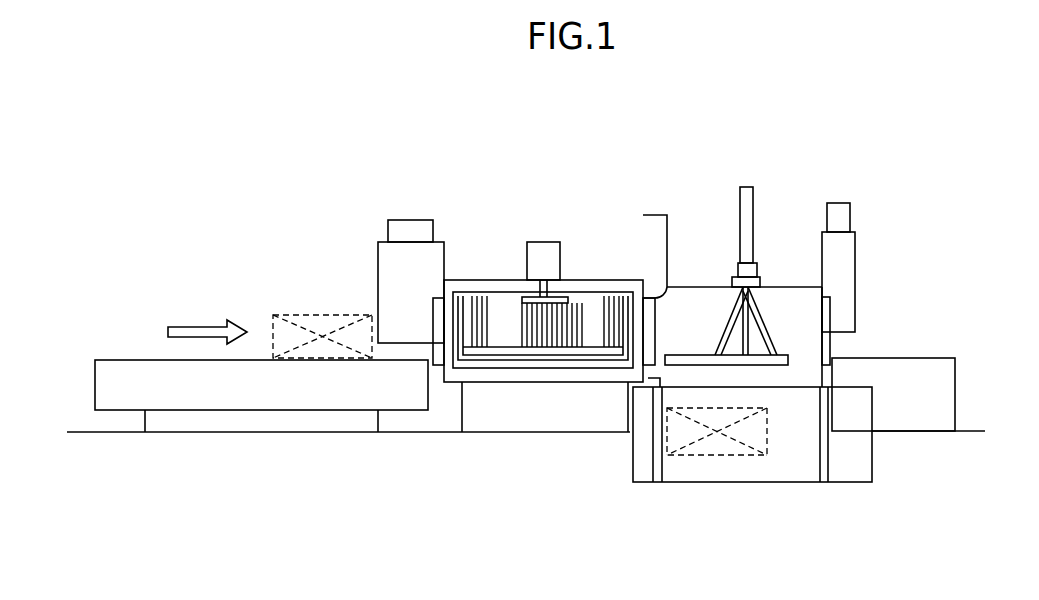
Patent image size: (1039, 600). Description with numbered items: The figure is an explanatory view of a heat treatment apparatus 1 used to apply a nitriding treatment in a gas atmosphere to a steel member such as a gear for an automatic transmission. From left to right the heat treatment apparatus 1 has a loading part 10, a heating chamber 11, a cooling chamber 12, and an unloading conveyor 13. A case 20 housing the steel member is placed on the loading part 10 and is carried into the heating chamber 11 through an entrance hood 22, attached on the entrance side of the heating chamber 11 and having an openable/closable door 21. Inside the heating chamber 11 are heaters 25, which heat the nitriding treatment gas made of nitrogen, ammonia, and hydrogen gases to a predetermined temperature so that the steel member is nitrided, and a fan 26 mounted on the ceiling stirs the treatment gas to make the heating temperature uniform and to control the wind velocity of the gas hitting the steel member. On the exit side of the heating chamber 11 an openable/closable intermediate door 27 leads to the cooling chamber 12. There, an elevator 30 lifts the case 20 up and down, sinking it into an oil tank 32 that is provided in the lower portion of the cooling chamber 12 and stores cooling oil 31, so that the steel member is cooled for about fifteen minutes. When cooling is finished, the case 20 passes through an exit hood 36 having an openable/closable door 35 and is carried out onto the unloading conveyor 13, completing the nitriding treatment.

The heat treatment apparatus 1 is at (578, 165).
The loading part 10 is at (114, 358).
The heating chamber 11 is at (619, 280).
The cooling chamber 12 is at (786, 292).
The unloading conveyor 13 is at (941, 358).
The case 20 is at (293, 315).
The door 21 is at (423, 310).
The entrance hood 22 is at (378, 262).
The heaters 25 is at (486, 302).
The fan 26 is at (541, 241).
The intermediate door 27 is at (657, 318).
The elevator 30 is at (730, 320).
The cooling oil 31 is at (797, 382).
The oil tank 32 is at (712, 486).
The door 35 is at (831, 343).
The exit hood 36 is at (857, 238).